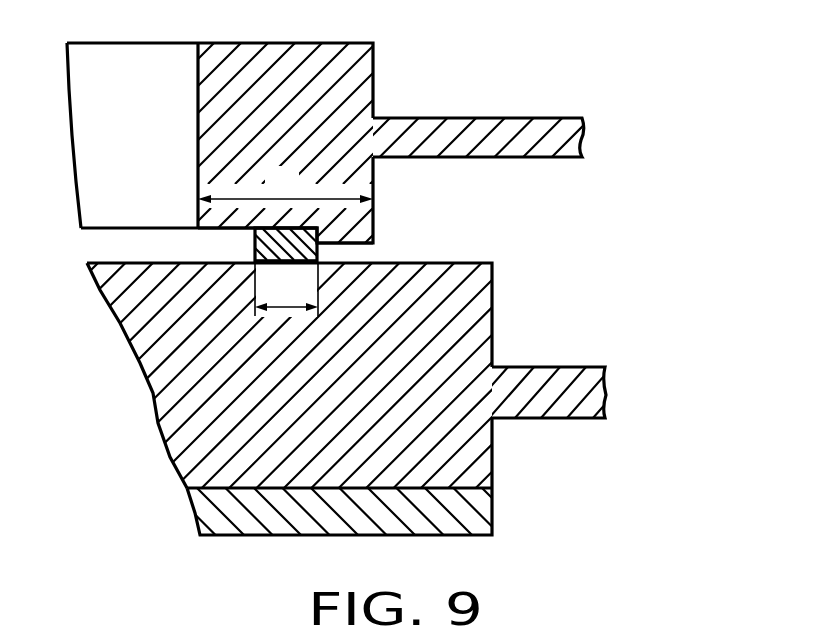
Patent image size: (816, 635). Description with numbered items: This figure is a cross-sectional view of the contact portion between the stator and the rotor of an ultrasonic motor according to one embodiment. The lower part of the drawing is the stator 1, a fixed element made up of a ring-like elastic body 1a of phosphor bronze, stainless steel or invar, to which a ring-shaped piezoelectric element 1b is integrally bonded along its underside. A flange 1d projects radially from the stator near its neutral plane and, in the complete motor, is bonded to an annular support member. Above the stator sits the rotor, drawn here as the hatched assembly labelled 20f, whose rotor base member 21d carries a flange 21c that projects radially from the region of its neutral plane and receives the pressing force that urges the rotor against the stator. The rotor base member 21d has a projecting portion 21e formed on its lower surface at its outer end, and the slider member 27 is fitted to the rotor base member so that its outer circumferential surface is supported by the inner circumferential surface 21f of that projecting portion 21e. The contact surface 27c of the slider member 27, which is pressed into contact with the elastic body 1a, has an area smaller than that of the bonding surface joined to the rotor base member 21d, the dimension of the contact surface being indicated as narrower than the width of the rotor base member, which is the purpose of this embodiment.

The stator 1 is at (362, 399).
The elastic body 1a is at (465, 310).
The piezoelectric element 1b is at (412, 508).
The flange 1d is at (590, 384).
The upper assembly 20f is at (399, 151).
The flange 21c is at (553, 118).
The rotor base member 21d is at (345, 62).
The projecting portion 21e is at (322, 225).
The inner circumferential surface 21f is at (318, 249).
The slider member 27 is at (300, 223).
The contact surface 27c is at (283, 264).